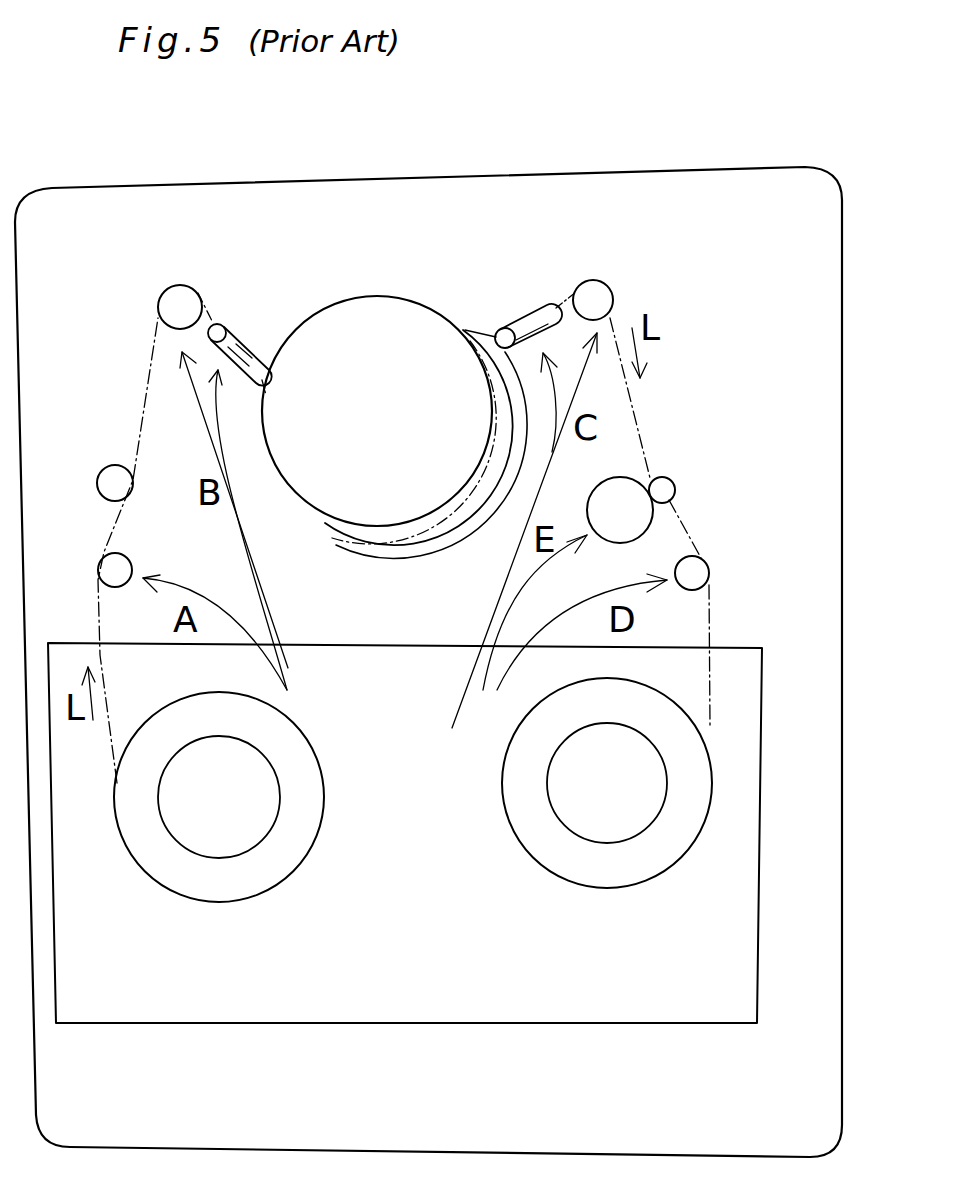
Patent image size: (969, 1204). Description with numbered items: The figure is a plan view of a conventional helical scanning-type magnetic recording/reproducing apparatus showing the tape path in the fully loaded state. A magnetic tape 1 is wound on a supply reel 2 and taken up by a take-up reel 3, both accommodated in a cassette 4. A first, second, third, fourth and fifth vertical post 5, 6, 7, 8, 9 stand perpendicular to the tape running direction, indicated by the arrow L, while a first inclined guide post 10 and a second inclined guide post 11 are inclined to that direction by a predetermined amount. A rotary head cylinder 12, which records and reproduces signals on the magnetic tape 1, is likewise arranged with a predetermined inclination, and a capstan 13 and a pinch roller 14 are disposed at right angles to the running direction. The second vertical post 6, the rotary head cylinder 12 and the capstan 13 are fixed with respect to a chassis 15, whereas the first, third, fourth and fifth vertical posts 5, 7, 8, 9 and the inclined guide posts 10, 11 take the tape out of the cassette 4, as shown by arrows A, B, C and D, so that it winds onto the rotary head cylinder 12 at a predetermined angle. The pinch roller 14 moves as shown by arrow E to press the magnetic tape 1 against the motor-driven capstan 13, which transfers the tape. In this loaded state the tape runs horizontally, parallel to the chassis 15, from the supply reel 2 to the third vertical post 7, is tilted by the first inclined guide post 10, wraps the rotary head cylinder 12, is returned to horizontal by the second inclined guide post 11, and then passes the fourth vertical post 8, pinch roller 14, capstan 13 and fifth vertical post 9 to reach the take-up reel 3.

The magnetic tape 1 is at (145, 398).
The supply reel 2 is at (213, 903).
The take-up reel 3 is at (600, 889).
The cassette 4 is at (313, 1024).
The first vertical post 5 is at (106, 557).
The second vertical post 6 is at (101, 469).
The third vertical post 7 is at (172, 288).
The fourth vertical post 8 is at (609, 284).
The fifth vertical post 9 is at (710, 564).
The first inclined guide post 10 is at (224, 322).
The second inclined guide post 11 is at (513, 317).
The rotary head cylinder 12 is at (373, 294).
The capstan 13 is at (674, 478).
The pinch roller 14 is at (628, 477).
The chassis 15 is at (367, 178).